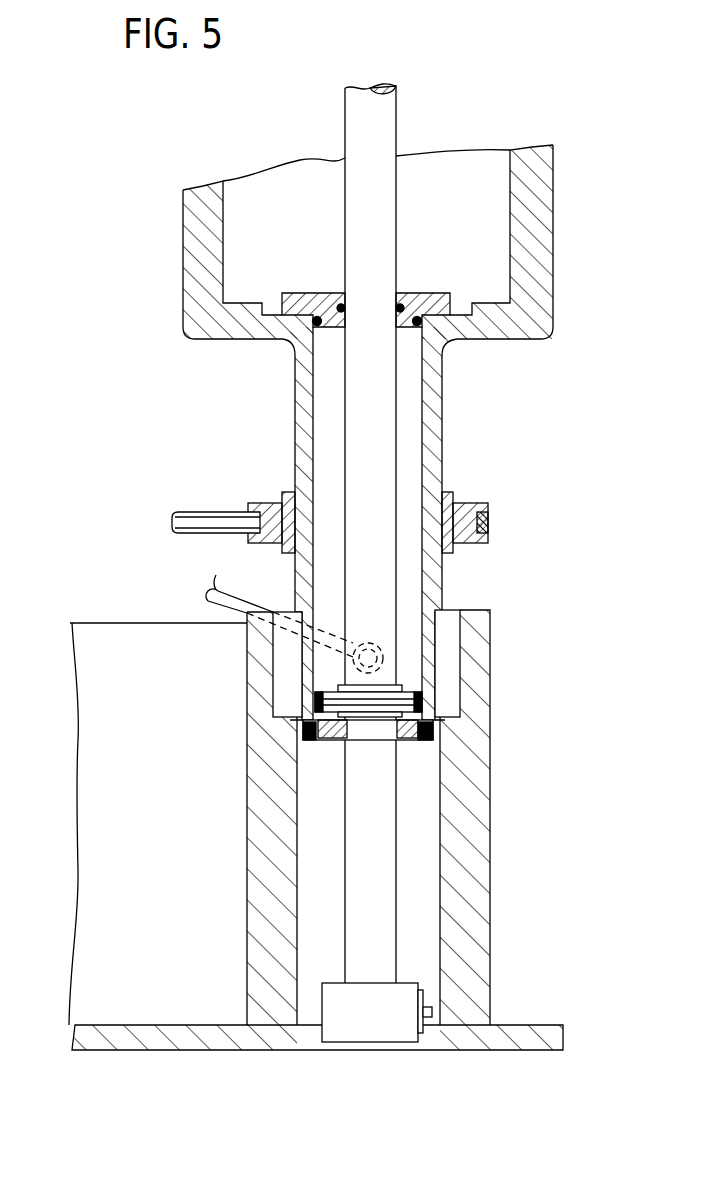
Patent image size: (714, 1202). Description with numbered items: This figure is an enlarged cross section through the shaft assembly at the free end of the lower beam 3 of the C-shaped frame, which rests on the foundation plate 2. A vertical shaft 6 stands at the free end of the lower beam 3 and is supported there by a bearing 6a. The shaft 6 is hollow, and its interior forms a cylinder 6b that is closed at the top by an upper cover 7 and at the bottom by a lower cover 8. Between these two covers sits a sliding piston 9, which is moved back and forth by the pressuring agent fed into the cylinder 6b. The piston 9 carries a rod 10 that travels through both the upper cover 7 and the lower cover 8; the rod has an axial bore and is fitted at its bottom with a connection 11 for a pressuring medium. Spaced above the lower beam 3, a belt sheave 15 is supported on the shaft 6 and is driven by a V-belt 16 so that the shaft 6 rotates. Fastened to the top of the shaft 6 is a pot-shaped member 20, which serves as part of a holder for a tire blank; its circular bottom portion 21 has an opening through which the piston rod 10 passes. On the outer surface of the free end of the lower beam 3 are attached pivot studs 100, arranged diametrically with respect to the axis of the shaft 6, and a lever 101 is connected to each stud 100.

The foundation plate 2 is at (123, 1033).
The lower beam 3 is at (98, 778).
The vertical shaft 6 is at (384, 523).
The bearing 6a is at (453, 672).
The cylinder 6b is at (417, 388).
The upper cover 7 is at (426, 308).
The lower cover 8 is at (413, 740).
The sliding piston 9 is at (397, 703).
The piston rod 10 is at (392, 572).
The connection 11 is at (430, 1012).
The belt sheave 15 is at (487, 535).
The V-belt 16 is at (493, 522).
The pot-shaped member 20 is at (398, 264).
The bottom portion 21 is at (492, 323).
The pivot stud 100 is at (367, 648).
The lever 101 is at (218, 592).